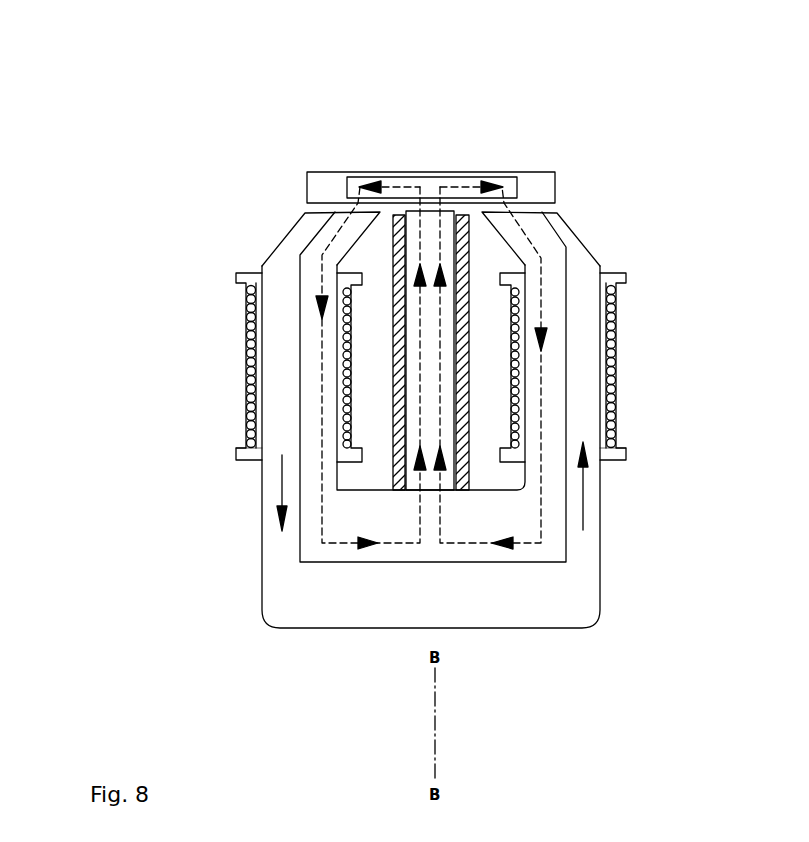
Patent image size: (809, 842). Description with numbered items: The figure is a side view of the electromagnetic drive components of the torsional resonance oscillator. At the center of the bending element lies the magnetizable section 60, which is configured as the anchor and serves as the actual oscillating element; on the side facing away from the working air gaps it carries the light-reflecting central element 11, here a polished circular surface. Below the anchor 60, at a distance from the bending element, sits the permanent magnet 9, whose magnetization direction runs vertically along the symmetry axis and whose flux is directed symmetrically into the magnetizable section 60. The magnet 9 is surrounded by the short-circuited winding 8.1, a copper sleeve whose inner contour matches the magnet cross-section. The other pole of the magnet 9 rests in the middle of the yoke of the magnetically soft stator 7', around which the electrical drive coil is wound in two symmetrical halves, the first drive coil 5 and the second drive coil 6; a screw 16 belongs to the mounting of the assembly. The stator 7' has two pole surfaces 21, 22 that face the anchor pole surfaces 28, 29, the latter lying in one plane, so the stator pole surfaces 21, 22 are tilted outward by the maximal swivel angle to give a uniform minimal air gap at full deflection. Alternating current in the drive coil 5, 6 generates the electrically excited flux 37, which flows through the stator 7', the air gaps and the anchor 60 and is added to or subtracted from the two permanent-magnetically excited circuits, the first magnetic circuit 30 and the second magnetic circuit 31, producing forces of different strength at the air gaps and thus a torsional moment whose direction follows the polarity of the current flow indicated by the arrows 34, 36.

The first drive coil 5 is at (141, 366).
The second drive coil 6 is at (695, 366).
The stator 7' is at (431, 494).
The short-circuited winding 8.1 is at (211, 350).
The magnet 9 is at (579, 350).
The central element 11 is at (404, 115).
The screw 16 is at (420, 508).
The free end of the pole shoe 21 is at (242, 193).
The free end of the pole shoe 22 is at (620, 212).
The outer rim of the central element 28 is at (281, 265).
The outer rim of the central element 29 is at (542, 143).
The first magnetic circuit 30 is at (317, 457).
The second magnetic circuit 31 is at (562, 446).
The arrow 34 is at (684, 555).
The arrow 36 is at (169, 571).
The electrically excited magnetic flux 37 is at (433, 490).
The magnetizable partial area of the bending element 60 is at (450, 112).